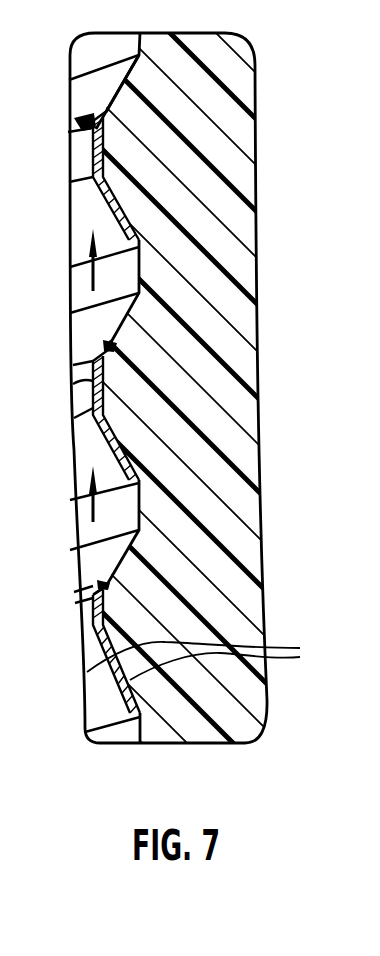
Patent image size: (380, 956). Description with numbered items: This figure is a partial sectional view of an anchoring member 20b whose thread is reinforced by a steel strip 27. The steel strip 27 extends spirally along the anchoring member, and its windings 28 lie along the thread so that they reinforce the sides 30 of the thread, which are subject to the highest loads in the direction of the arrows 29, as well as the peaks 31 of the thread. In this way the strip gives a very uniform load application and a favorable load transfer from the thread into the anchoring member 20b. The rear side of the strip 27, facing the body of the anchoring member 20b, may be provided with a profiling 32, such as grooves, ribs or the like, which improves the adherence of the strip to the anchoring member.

The body section 20b is at (247, 233).
The steel strip 27 is at (78, 116).
The windings 28 is at (93, 416).
The arrows 29 is at (92, 524).
The sides 30 is at (103, 674).
The peaks 31 is at (75, 376).
The profiling 32 is at (206, 661).